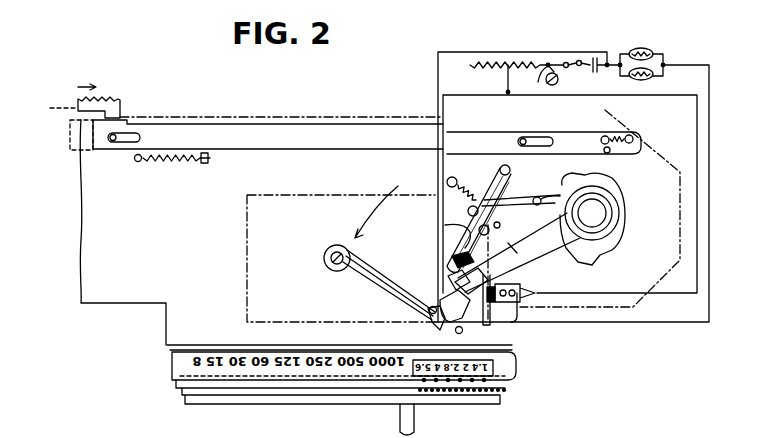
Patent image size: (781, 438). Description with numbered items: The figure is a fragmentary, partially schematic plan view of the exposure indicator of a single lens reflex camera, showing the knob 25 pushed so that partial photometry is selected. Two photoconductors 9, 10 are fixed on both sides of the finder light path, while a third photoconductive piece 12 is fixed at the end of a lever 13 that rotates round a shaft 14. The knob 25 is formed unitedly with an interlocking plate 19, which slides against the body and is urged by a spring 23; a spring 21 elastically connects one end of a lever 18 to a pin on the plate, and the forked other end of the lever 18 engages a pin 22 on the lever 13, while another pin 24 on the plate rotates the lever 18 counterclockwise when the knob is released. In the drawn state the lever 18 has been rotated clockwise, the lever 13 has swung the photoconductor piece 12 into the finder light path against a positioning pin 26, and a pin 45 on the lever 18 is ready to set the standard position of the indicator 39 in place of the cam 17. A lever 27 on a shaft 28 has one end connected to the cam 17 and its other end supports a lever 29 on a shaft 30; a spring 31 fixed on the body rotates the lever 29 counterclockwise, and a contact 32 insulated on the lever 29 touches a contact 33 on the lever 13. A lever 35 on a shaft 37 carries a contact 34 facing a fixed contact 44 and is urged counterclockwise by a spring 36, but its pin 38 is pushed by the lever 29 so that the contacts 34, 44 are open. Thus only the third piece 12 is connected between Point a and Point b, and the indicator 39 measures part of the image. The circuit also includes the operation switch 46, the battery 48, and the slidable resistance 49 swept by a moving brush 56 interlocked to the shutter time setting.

The photoconductor 9 is at (652, 78).
The photoconductor 10 is at (640, 48).
The third photoconductive piece 12 is at (324, 256).
The lever 13 is at (362, 262).
The shaft 14 is at (432, 322).
The cam 17 is at (592, 252).
The lever 18 is at (545, 252).
The interlocking plate 19 is at (305, 125).
The spring 21 is at (632, 150).
The pin 22 is at (476, 292).
The spring 23 is at (166, 163).
The pin 24 is at (608, 153).
The knob 25 is at (110, 99).
The pin 26 is at (463, 327).
The lever 27 is at (563, 165).
The shaft 28 is at (504, 164).
The lever 29 is at (460, 238).
The shaft 30 is at (456, 218).
The spring 31 is at (447, 183).
The contact 32 is at (452, 262).
The contact 33 is at (455, 282).
The contact 34 is at (490, 310).
The lever 35 is at (500, 284).
The spring 36 is at (500, 217).
The shaft 37 is at (501, 232).
The pin 38 is at (500, 170).
The indicator 39 is at (541, 73).
The contact 44 is at (510, 305).
The pin 45 is at (537, 197).
The operation switch 46 is at (575, 72).
The electric source battery 48 is at (590, 72).
The slidable resistance 49 is at (530, 64).
The moving brush 56 is at (507, 85).
The Point a is at (608, 68).
The Point b is at (553, 86).